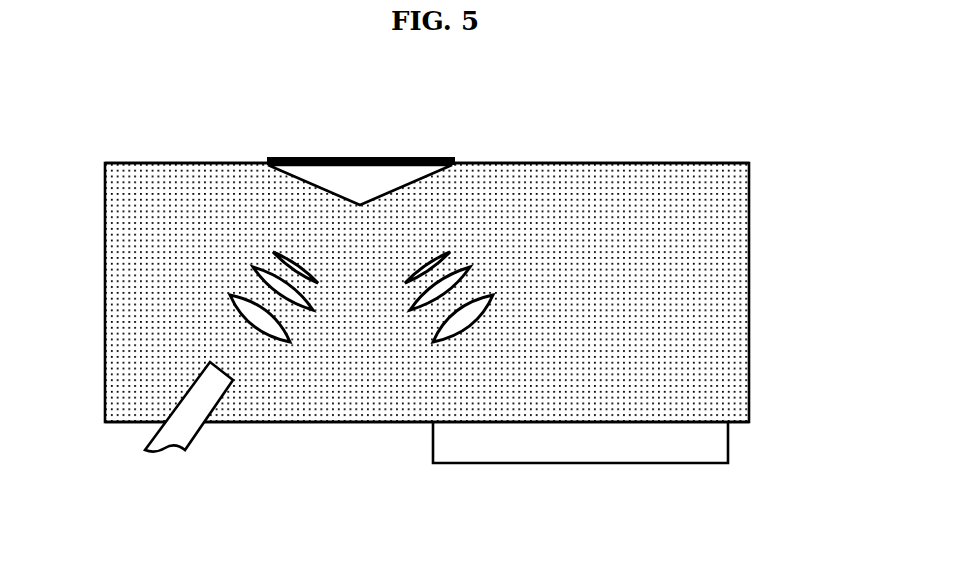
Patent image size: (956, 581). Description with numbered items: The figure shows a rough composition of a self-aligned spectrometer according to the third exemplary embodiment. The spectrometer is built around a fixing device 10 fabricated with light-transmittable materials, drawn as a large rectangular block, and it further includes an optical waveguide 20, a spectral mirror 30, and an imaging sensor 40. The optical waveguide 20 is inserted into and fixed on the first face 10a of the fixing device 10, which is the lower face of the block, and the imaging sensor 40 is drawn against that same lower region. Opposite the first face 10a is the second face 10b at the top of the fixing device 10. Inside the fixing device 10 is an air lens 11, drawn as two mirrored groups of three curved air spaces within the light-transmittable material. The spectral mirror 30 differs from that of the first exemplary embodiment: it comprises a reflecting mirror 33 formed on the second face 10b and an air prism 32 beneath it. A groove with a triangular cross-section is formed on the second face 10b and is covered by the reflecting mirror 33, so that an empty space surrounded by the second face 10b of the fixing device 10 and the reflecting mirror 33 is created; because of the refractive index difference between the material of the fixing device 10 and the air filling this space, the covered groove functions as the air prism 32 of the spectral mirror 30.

The fixing device 10 is at (750, 286).
The first face 10a is at (746, 424).
The second face 10b is at (720, 163).
The air lens 11 is at (229, 299).
The optical waveguide 20 is at (186, 456).
The spectral mirror 30 is at (361, 135).
The air prism 32 is at (300, 177).
The reflecting mirror 33 is at (331, 157).
The imaging sensor 40 is at (562, 465).